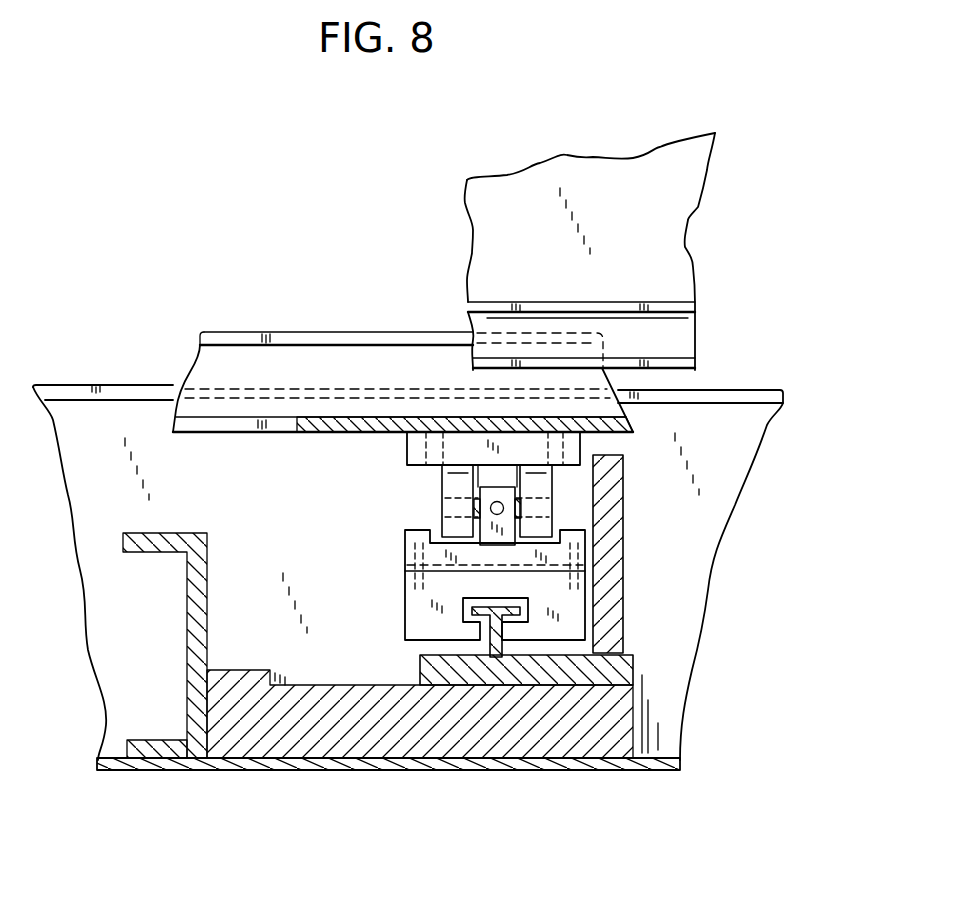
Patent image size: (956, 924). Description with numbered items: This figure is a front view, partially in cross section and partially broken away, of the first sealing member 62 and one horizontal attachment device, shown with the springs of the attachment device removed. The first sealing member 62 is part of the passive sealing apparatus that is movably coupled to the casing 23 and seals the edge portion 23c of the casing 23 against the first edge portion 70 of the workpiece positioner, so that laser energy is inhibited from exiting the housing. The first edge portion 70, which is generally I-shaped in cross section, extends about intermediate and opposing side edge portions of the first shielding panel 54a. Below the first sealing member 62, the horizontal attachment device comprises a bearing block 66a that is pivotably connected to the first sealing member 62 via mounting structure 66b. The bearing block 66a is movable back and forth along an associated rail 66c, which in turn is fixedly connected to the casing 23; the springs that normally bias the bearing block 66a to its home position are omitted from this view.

The casing 23 is at (612, 718).
The edge portion of the casing 23c is at (710, 397).
The first shielding panel 54a is at (660, 221).
The first sealing member 62 is at (285, 347).
The bearing block 66a is at (565, 605).
The mounting structure 66b is at (493, 558).
The rail 66c is at (493, 628).
The first edge portion 70 is at (670, 343).